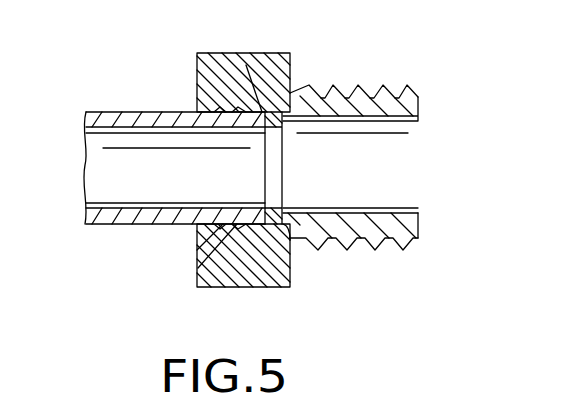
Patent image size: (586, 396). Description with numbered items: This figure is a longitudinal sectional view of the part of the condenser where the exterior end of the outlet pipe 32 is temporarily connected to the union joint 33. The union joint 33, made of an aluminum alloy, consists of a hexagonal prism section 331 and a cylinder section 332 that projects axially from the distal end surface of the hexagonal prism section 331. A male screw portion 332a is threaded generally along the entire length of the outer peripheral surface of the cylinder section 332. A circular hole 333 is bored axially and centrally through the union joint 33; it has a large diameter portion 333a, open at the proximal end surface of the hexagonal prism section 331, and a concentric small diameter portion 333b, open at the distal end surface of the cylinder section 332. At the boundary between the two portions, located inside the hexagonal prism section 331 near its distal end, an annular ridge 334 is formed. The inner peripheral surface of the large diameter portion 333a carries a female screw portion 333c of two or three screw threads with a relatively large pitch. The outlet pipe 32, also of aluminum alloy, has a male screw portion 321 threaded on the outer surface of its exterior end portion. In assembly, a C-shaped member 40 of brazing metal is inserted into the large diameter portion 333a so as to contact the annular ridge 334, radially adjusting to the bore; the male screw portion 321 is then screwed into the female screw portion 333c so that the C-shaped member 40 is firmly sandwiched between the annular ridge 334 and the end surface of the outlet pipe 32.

The outlet pipe 32 is at (112, 223).
The male screw portion 321 is at (197, 82).
The union joint 33 is at (298, 184).
The hexagonal prism section 331 is at (237, 276).
The cylinder section 332 is at (361, 182).
The male screw portion 332a is at (391, 85).
The circular hole 333 is at (307, 208).
The large diameter portion 333a is at (246, 65).
The small diameter portion 333b is at (357, 212).
The female screw portion 333c is at (197, 260).
The annular ridge 334 is at (292, 243).
The C-shaped member 40 is at (281, 106).